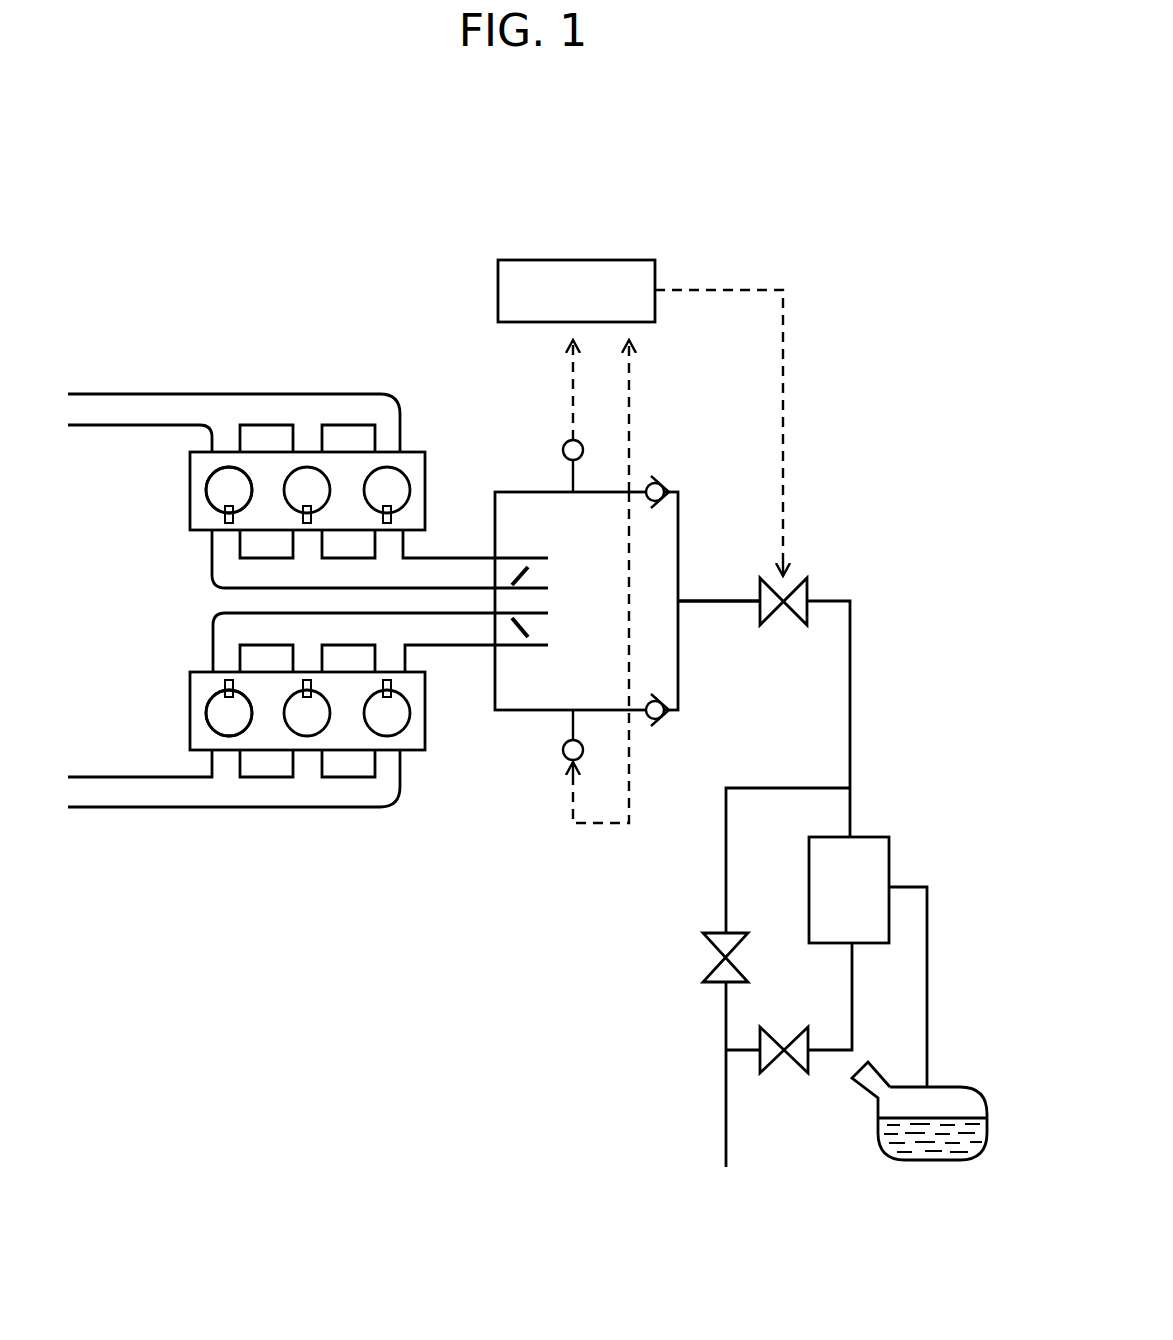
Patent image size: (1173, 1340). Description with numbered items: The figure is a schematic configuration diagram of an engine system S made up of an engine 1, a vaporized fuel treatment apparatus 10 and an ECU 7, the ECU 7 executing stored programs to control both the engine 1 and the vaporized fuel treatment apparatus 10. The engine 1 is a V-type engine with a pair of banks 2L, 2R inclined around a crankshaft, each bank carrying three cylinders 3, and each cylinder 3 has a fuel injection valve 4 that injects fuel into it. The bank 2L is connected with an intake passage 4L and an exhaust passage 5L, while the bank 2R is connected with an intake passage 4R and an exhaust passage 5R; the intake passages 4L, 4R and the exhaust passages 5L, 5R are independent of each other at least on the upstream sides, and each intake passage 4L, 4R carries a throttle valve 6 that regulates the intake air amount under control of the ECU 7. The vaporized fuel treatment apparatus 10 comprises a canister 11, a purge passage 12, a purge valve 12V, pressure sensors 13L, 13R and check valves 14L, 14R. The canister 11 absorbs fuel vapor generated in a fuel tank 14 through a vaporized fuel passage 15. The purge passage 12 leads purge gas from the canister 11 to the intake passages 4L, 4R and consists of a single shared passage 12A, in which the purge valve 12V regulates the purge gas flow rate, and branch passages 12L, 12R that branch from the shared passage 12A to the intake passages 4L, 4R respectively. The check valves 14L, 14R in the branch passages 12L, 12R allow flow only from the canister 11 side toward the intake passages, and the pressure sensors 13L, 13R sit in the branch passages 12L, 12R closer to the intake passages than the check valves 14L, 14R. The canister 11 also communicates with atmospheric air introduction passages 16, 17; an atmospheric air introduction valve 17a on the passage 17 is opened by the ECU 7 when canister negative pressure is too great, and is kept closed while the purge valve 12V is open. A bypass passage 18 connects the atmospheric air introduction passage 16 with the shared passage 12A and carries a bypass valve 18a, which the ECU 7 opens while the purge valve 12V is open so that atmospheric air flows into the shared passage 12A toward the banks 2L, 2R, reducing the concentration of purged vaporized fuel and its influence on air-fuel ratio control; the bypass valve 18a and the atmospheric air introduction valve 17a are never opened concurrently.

The engine system S is at (757, 203).
The engine 1 is at (358, 357).
The bank 2L is at (172, 490).
The bank 2R is at (172, 721).
The cylinder 3 is at (222, 497).
The fuel injection valve 4 is at (222, 524).
The intake passage 4L is at (461, 557).
The intake passage 4R is at (462, 645).
The exhaust passage 5L is at (235, 394).
The exhaust passage 5R is at (233, 807).
The throttle valve 6 is at (535, 633).
The ECU 7 is at (600, 259).
The vaporized fuel treatment apparatus 10 is at (807, 462).
The canister 11 is at (865, 837).
The purge passage 12 is at (882, 603).
The shared passage 12A is at (850, 662).
The branch passage 12L is at (678, 536).
The branch passage 12R is at (678, 674).
The purge valve 12V is at (800, 578).
The pressure sensor 13L is at (563, 450).
The pressure sensor 13R is at (563, 750).
The fuel tank 14 is at (907, 1087).
The check valve 14L is at (652, 482).
The check valve 14R is at (651, 722).
The vaporized fuel passage 15 is at (927, 976).
The atmospheric air introduction passage 16 is at (726, 1116).
The atmospheric air introduction passage 17 is at (833, 1049).
The atmospheric air introduction valve 17a is at (788, 1074).
The bypass passage 18 is at (726, 1017).
The bypass valve 18a is at (730, 932).